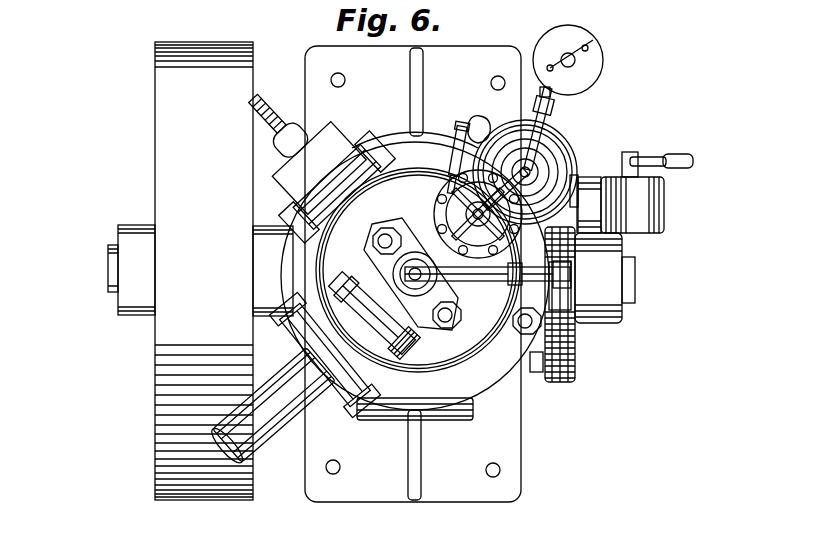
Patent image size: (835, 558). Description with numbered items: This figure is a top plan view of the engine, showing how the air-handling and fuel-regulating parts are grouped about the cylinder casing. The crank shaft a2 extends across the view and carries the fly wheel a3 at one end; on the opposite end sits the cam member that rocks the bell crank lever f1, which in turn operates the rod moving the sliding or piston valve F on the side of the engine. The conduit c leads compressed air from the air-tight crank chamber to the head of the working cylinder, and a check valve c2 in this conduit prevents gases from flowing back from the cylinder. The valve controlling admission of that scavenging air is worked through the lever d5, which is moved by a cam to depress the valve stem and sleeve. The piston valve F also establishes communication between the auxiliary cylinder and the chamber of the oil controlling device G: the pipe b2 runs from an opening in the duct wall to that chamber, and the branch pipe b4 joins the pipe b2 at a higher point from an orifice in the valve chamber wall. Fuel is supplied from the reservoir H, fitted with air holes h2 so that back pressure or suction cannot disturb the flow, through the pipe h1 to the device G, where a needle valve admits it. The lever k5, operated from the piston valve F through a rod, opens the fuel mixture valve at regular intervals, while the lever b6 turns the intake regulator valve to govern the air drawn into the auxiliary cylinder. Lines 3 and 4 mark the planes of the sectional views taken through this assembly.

The fly wheel a3 is at (606, 340).
The crank shaft a2 is at (629, 278).
The section line 3- 3 is at (745, 281).
The section line 4- 4 is at (585, 120).
The conduit c is at (325, 175).
The check valve c2 is at (281, 108).
The pipe b2 is at (452, 152).
The branch pipe b4 is at (480, 120).
The lever b6 is at (683, 170).
The oil controlling device G is at (478, 214).
The piston valve F is at (541, 163).
The oil reservoir H is at (595, 73).
The pipe h1 is at (518, 131).
The air holes h2 is at (593, 40).
The lever k5 is at (542, 165).
The lever d5 is at (415, 276).
The bell crank lever f1 is at (533, 362).